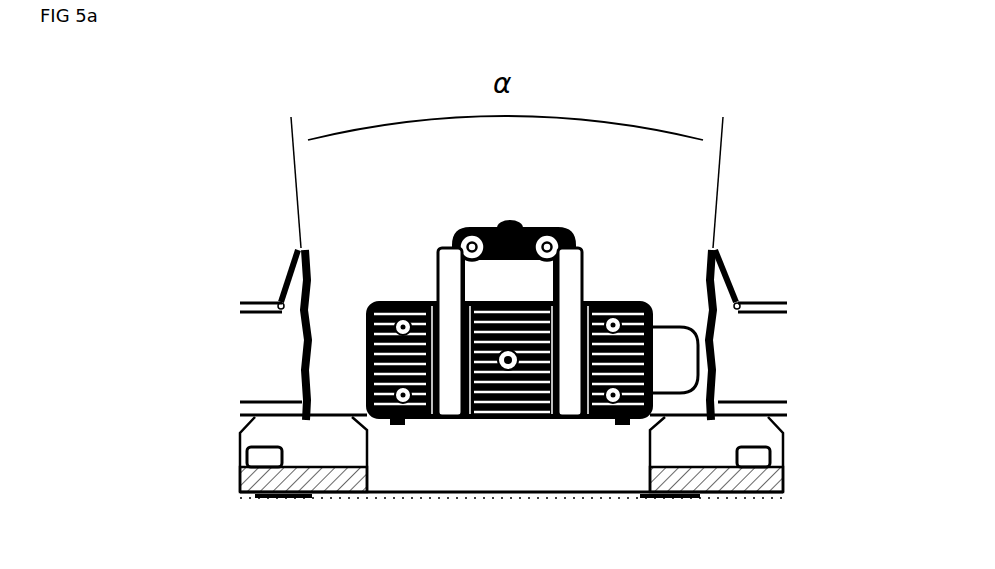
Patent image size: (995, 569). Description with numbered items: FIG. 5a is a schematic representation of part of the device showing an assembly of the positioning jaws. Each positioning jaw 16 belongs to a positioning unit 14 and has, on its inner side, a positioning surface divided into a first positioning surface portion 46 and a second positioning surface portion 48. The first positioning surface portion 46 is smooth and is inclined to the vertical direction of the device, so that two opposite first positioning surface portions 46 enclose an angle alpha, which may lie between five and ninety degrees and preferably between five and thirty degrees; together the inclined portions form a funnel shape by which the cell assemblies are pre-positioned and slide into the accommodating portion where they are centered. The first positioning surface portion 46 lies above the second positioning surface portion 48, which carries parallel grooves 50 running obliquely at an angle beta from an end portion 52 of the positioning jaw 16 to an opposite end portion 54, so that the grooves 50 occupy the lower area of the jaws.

The positioning unit 14 is at (247, 262).
The positioning jaw 16 is at (250, 327).
The first positioning surface portion 46 is at (445, 275).
The second positioning surface portion 48 is at (298, 350).
The grooves 50 is at (655, 347).
The end portion 52 is at (657, 383).
The opposite end portion 54 is at (357, 373).